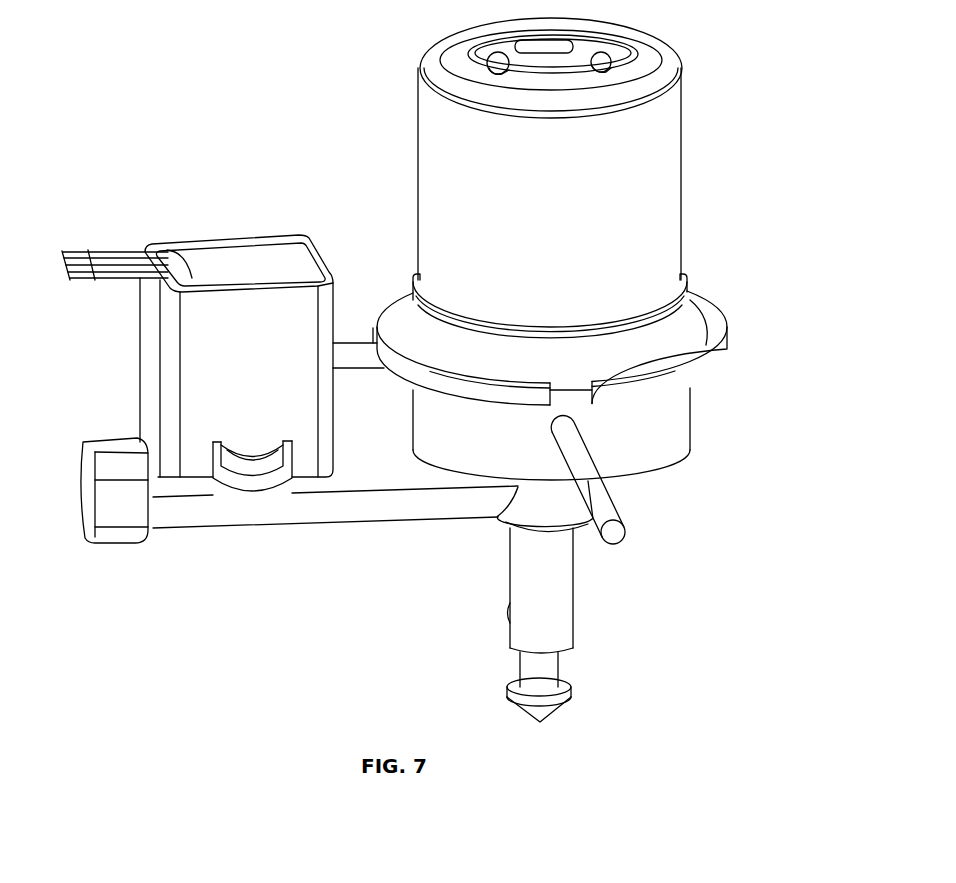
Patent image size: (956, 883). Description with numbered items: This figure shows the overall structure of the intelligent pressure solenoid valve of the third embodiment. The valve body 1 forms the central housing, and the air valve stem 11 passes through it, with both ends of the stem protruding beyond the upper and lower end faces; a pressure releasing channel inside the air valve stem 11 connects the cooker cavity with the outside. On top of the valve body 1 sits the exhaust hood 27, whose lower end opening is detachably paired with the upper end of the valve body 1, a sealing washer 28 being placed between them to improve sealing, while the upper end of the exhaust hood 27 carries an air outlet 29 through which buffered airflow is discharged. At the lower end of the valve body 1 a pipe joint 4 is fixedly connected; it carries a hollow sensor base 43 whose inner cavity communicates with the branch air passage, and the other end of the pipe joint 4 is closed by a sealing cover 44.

The valve body 1 is at (675, 410).
The pipe joint 4 is at (366, 452).
The air valve stem 11 is at (552, 593).
The exhaust hood 27 is at (597, 197).
The sealing washer 28 is at (680, 334).
The air outlet 29 is at (613, 65).
The sensor base 43 is at (227, 265).
The sealing cover 44 is at (120, 502).